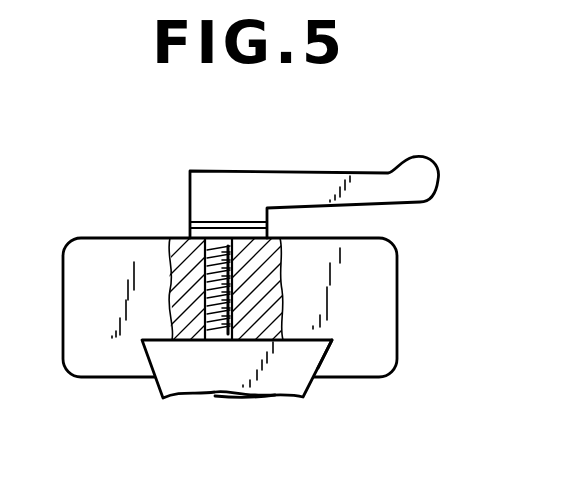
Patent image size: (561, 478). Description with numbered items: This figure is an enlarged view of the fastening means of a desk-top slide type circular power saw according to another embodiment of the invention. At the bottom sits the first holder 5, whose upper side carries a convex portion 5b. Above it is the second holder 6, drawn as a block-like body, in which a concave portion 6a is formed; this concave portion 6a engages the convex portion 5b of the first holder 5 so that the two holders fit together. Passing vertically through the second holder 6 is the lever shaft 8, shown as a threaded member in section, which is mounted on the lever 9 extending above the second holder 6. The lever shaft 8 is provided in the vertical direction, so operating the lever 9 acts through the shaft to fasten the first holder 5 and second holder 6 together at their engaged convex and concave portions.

The first holder 5 is at (175, 390).
The convex portion 5b is at (267, 385).
The second holder 6 is at (377, 307).
The concave portion 6a is at (315, 342).
The lever shaft 8 is at (208, 267).
The lever 9 is at (364, 184).